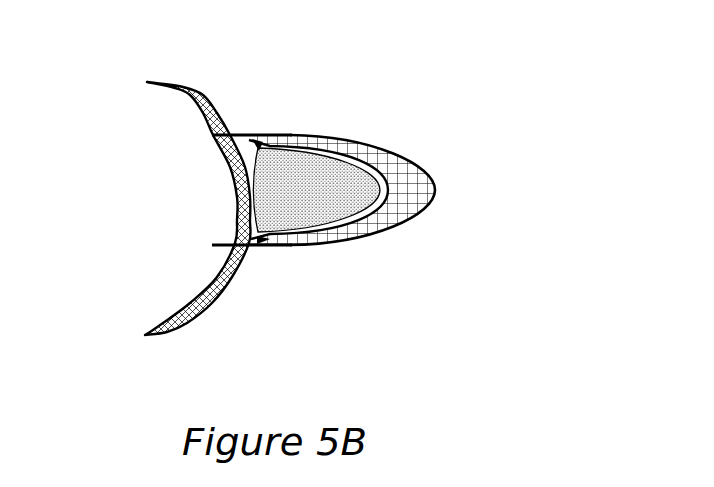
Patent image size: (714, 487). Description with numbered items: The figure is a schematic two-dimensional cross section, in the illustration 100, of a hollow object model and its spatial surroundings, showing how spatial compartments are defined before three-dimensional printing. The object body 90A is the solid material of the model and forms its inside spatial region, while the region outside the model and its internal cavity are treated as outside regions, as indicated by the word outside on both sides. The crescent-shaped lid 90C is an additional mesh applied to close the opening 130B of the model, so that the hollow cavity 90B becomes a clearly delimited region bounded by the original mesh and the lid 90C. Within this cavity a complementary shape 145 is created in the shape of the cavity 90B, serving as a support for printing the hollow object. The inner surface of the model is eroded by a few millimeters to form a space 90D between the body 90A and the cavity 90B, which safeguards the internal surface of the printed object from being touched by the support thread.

The window assembly 100 is at (93, 79).
The object body 90A is at (373, 148).
The hollow cavity 90B is at (258, 246).
The lid 90C is at (183, 84).
The space 90D is at (257, 134).
The opening 130B is at (238, 193).
The complementary shape 145 is at (317, 207).